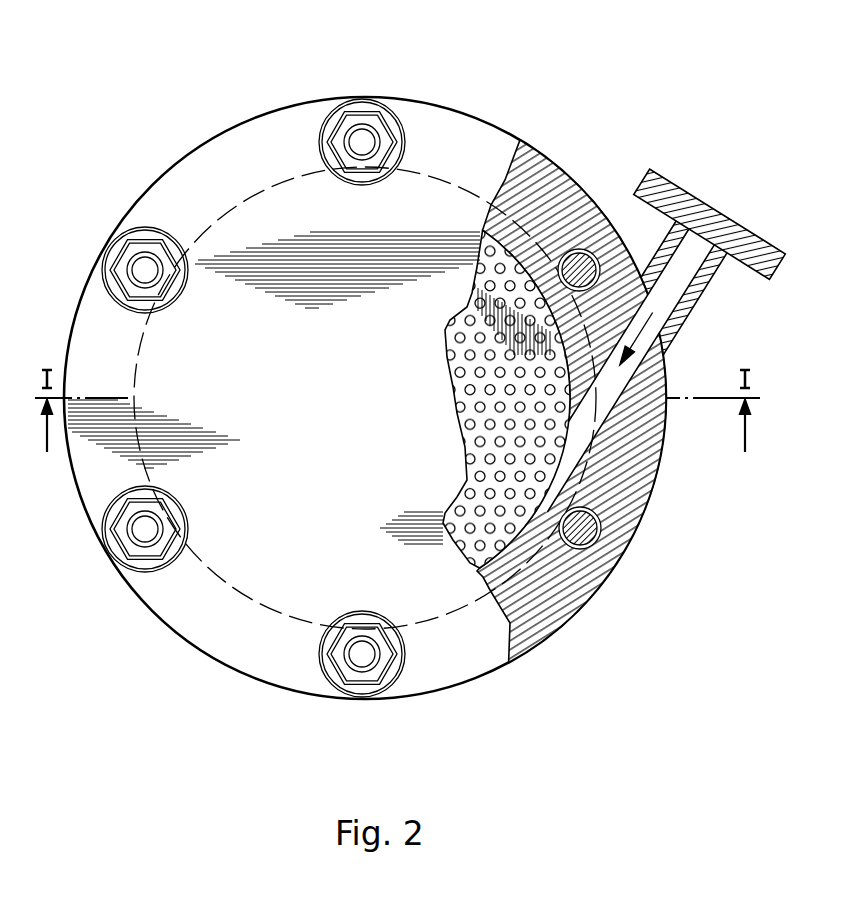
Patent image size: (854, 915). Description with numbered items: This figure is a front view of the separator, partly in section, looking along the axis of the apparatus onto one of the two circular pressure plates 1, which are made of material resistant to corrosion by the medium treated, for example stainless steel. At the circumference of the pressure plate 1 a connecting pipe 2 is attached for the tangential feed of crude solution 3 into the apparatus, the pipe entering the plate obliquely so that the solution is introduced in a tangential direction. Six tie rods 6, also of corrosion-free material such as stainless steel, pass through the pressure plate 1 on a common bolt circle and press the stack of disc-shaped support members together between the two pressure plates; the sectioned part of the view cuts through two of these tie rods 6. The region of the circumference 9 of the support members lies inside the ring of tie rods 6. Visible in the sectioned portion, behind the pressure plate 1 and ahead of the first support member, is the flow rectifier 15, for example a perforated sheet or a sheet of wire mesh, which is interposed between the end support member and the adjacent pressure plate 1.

The circular pressure plate 1 is at (497, 116).
The connecting pipe 2 is at (694, 206).
The crude solution 3 is at (717, 240).
The tie rod 6 is at (370, 140).
The circumference 9 is at (476, 612).
The flow rectifier 15 is at (512, 442).